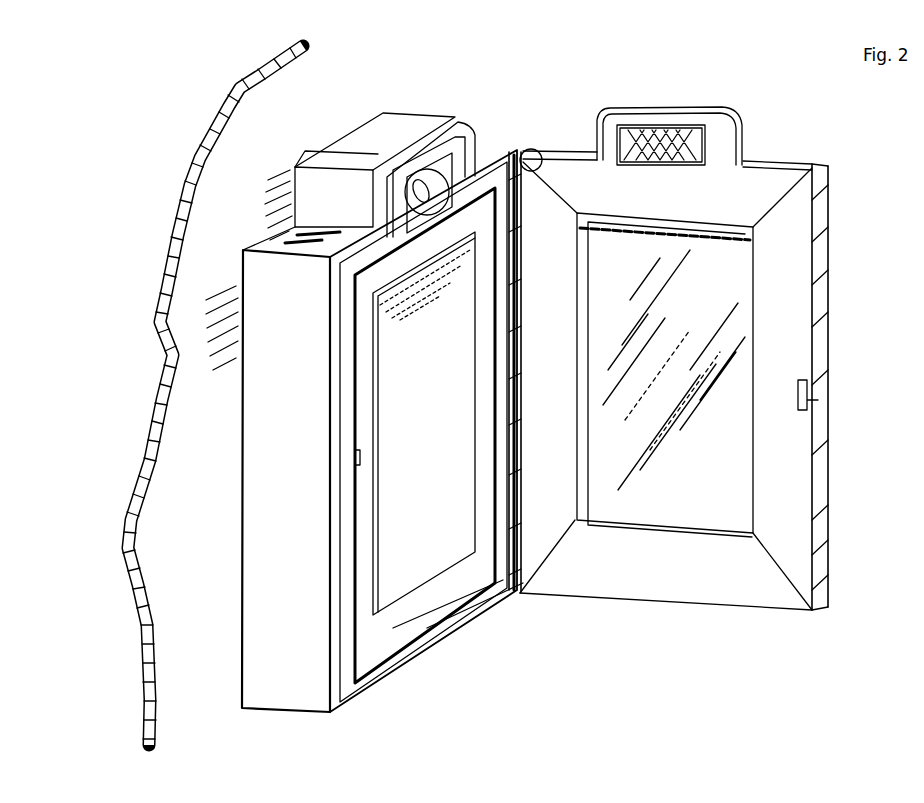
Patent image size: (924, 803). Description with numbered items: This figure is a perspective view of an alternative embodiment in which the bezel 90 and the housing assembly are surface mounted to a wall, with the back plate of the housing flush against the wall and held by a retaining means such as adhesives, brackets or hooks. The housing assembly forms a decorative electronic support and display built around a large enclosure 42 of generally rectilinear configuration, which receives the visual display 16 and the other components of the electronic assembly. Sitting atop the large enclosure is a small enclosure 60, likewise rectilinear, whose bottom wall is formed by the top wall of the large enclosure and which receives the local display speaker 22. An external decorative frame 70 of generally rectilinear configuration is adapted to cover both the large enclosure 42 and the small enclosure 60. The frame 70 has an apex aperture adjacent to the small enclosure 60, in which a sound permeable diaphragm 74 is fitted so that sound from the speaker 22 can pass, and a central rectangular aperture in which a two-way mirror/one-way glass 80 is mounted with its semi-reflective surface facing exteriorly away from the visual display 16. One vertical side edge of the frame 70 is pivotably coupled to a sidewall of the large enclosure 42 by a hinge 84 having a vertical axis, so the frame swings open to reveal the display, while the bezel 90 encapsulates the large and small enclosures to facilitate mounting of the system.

The visual display 16 is at (450, 433).
The local display speaker 22 is at (437, 177).
The large enclosure 42 is at (383, 668).
The small enclosure 60 is at (455, 137).
The external decorative frame 70 is at (832, 243).
The sound permeable diaphragm 74 is at (655, 127).
The two-way mirror/one-way glass 80 is at (633, 302).
The hinge 84 is at (538, 150).
The bezel 90 is at (307, 642).